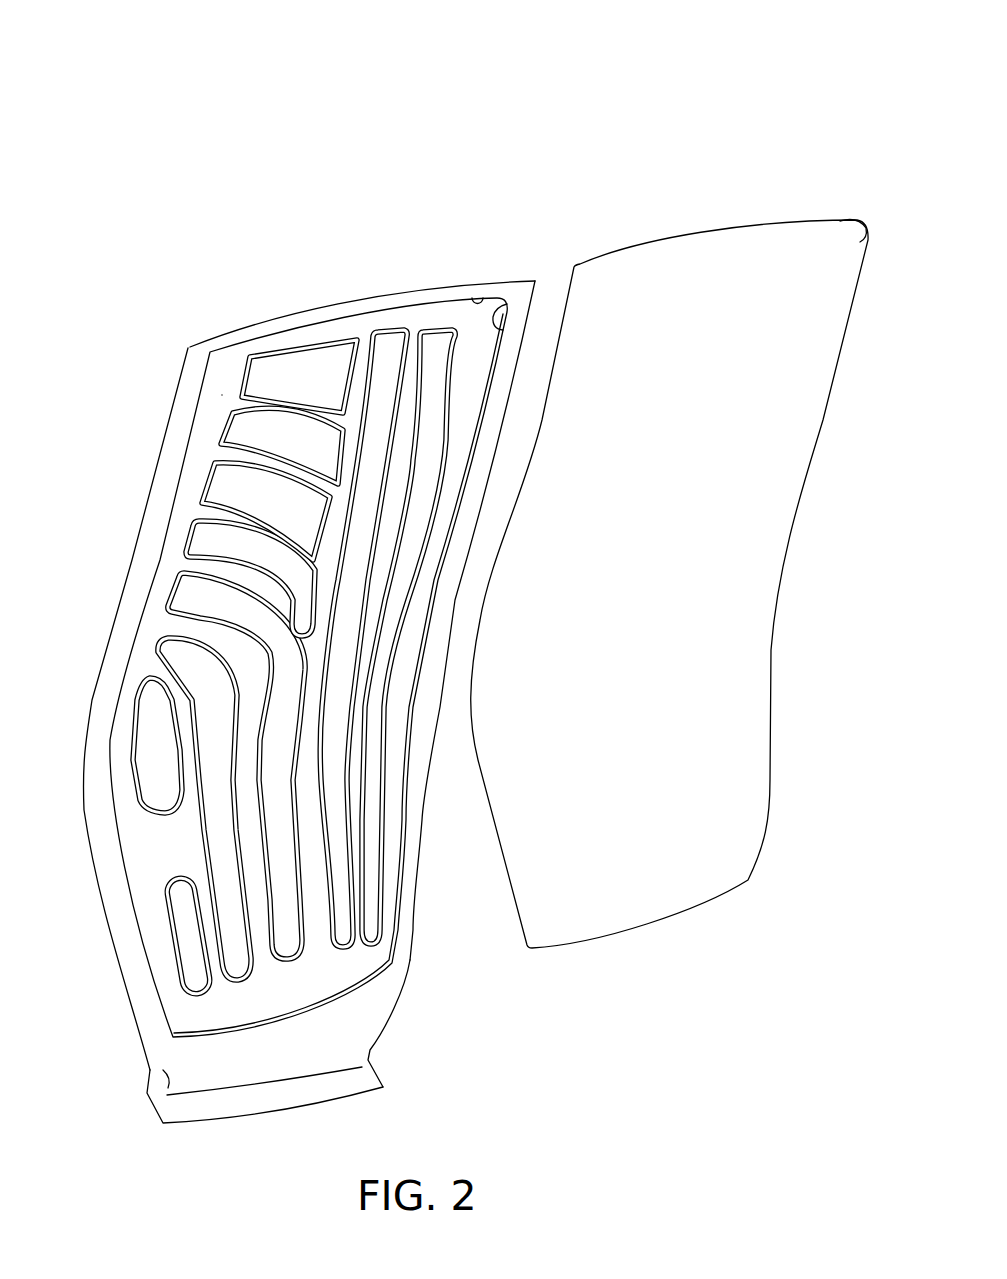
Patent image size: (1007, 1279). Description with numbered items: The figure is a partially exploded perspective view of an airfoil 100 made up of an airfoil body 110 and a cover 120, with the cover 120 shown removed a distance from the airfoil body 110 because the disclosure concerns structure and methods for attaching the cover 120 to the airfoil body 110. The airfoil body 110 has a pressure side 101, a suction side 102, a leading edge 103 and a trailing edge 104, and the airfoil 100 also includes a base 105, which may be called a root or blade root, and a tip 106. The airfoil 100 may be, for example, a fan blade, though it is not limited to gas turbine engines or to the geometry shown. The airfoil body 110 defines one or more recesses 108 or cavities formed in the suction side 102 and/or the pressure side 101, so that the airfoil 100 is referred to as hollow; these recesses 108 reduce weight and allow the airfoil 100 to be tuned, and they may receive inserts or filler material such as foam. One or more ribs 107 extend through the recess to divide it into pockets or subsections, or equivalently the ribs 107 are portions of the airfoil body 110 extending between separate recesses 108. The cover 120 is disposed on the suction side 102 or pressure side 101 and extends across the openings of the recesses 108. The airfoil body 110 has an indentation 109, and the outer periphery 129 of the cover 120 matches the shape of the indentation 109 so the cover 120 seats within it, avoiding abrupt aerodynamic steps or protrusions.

The airfoil 100 is at (270, 66).
The pressure side 101 is at (220, 398).
The suction side 102 is at (265, 305).
The leading edge 103 is at (97, 657).
The trailing edge 104 is at (421, 833).
The base 105 is at (312, 1097).
The tip 106 is at (386, 294).
The ribs 107 is at (313, 567).
The recesses 108 is at (294, 655).
The indentation 109 is at (508, 300).
The airfoil body 110 is at (386, 1004).
The cover 120 is at (543, 950).
The outer periphery 129 is at (857, 240).